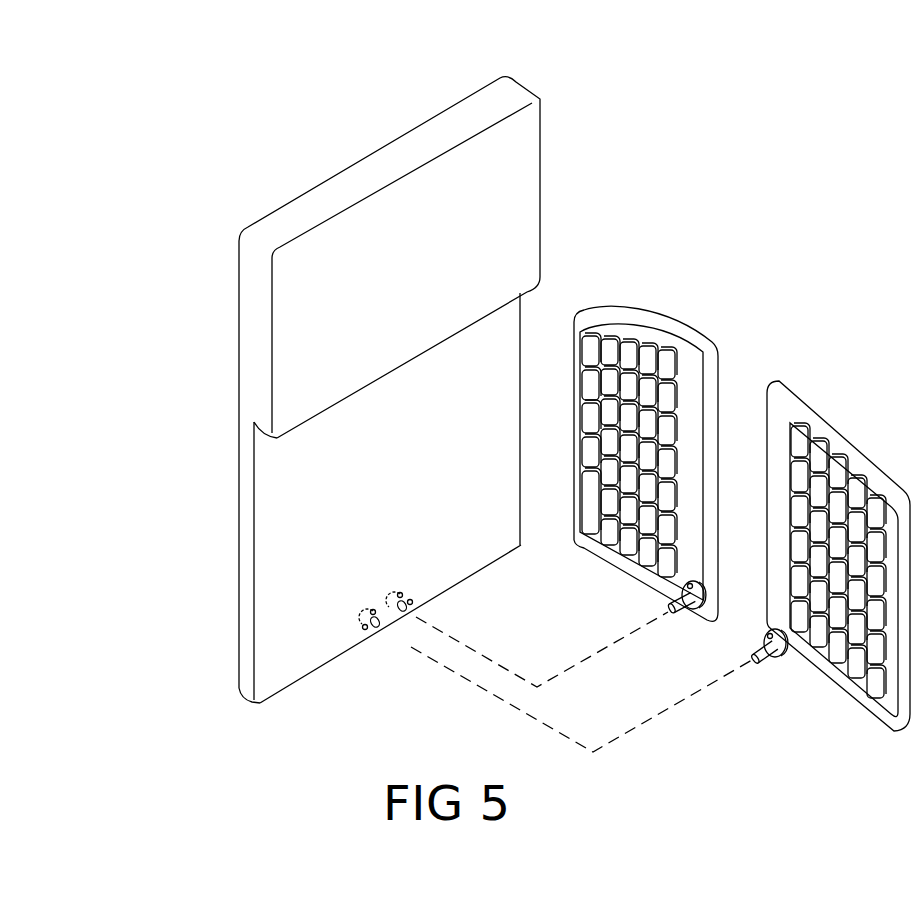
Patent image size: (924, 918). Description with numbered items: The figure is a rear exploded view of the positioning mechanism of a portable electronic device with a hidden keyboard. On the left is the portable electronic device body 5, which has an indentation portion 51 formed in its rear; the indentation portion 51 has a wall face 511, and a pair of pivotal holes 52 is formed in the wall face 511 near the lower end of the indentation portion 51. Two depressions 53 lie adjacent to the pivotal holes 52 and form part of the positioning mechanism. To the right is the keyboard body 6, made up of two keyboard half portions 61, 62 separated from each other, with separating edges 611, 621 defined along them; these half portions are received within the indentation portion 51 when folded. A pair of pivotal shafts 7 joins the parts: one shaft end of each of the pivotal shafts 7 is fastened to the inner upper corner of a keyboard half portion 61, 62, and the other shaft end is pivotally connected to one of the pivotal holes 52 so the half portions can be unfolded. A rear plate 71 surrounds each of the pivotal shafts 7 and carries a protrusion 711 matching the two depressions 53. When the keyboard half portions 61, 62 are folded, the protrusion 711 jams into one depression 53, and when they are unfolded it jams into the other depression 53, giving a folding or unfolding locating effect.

The portable electronic device body 5 is at (297, 146).
The indentation portion 51 is at (277, 472).
The wall face 511 is at (297, 551).
The pivotal holes 52 is at (376, 628).
The depressions 53 is at (400, 592).
The keyboard body 6 is at (789, 299).
The keyboard half portion 61 is at (631, 438).
The separating edge 611 is at (645, 580).
The keyboard half portion 62 is at (838, 565).
The separating edge 621 is at (833, 698).
The pivotal shafts 7 is at (668, 620).
The rear plate 71 is at (710, 603).
The protrusion 711 is at (691, 586).